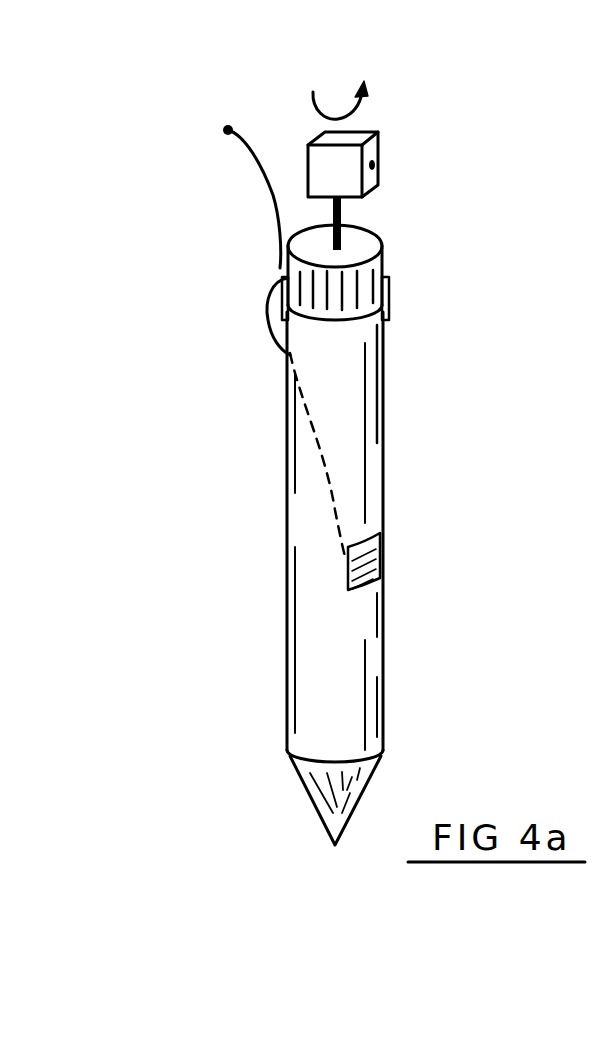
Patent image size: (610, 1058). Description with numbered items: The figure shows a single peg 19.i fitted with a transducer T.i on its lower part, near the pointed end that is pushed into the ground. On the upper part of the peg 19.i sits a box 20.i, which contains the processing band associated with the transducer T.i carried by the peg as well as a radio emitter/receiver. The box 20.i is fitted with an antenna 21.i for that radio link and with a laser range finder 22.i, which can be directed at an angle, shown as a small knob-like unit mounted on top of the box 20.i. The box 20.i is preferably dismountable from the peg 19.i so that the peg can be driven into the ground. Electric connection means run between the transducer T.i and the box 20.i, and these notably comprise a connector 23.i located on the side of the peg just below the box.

The peg 19.i is at (435, 439).
The box 20.i is at (362, 282).
The antenna 21.i is at (265, 170).
The laser range finder 22.i is at (352, 138).
The connector 23.i is at (262, 342).
The transducer T.i is at (408, 543).